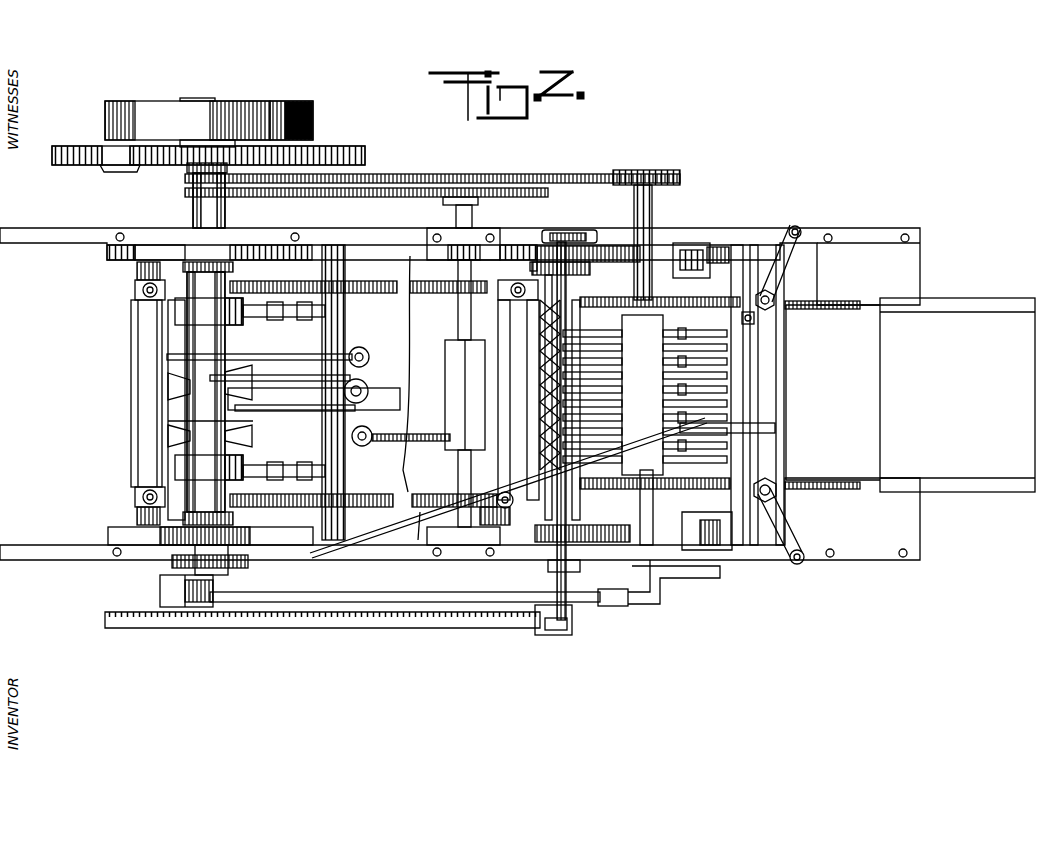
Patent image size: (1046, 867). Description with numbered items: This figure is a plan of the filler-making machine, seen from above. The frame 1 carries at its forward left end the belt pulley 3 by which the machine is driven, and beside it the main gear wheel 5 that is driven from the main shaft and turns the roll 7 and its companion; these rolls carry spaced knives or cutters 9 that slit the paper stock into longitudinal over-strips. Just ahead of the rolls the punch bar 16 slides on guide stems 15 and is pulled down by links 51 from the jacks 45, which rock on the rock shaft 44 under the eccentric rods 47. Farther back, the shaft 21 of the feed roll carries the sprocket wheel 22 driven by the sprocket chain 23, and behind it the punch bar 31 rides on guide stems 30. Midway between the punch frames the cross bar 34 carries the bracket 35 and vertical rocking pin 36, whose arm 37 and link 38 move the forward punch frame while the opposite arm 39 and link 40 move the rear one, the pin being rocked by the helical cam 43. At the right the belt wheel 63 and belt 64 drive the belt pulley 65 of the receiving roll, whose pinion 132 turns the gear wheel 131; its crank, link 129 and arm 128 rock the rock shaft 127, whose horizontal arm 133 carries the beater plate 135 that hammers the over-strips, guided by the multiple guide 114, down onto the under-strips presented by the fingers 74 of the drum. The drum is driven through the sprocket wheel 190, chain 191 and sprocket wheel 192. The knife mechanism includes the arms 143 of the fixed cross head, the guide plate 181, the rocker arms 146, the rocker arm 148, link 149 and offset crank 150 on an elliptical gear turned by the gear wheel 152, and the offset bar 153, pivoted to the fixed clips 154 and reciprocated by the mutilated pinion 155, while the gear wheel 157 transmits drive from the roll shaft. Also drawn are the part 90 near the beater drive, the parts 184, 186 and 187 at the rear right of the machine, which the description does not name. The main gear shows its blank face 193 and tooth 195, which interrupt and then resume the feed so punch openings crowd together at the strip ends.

The frame 1 is at (757, 552).
The belt pulley 3 is at (209, 122).
The main gear wheel 5 is at (367, 152).
The roll 7 is at (196, 328).
The knives or cutters 9 is at (172, 433).
The guide stems 15 is at (135, 290).
The punch bar 16 is at (130, 450).
The shaft 21 is at (458, 473).
The sprocket wheel 22 is at (418, 202).
The sprocket chain 23 is at (372, 197).
The guide stems 30 is at (513, 500).
The punch bar 31 is at (490, 318).
The cross bar 34 is at (417, 346).
The bracket 35 is at (378, 380).
The rocking pin 36 is at (352, 392).
The arm 37 is at (345, 377).
The link 38 is at (275, 354).
The arm 39 is at (340, 412).
The link 40 is at (420, 434).
The helical cam 43 is at (176, 383).
The rock shaft 44 is at (364, 446).
The jacks or rockers 45 is at (364, 286).
The eccentric rods 47 is at (283, 305).
The links 51 is at (136, 270).
The belt wheel 63 is at (302, 630).
The belt 64 is at (508, 630).
The belt pulley 65 is at (605, 255).
The fingers 74 is at (712, 300).
The shaft 90 is at (653, 200).
The multiple guide 114 is at (545, 378).
The rock shaft 127 is at (570, 498).
The arm 128 is at (588, 231).
The link 129 is at (575, 232).
The gear wheel 131 is at (590, 270).
The pinion 132 is at (534, 264).
The horizontal arm 133 is at (618, 345).
The beater plate 135 is at (662, 390).
The arms 143 is at (776, 270).
The rocker arms 146 is at (743, 250).
The rocker arm 148 is at (672, 580).
The link 149 is at (583, 607).
The offset crank 150 is at (183, 582).
The gear wheel 152 is at (248, 566).
The offset bar 153 is at (418, 542).
The fixed clips 154 is at (760, 430).
The mutilated pinion 155 is at (230, 544).
The gear wheel 157 is at (232, 266).
The guide plate 181 is at (752, 322).
The rack 184 is at (822, 471).
The carriage 186 is at (910, 395).
The rack 187 is at (832, 301).
The sprocket wheel 190 is at (662, 170).
The chain 191 is at (570, 165).
The sprocket wheel 192 is at (186, 176).
The blank face 193 is at (103, 152).
The tooth 195 is at (116, 170).